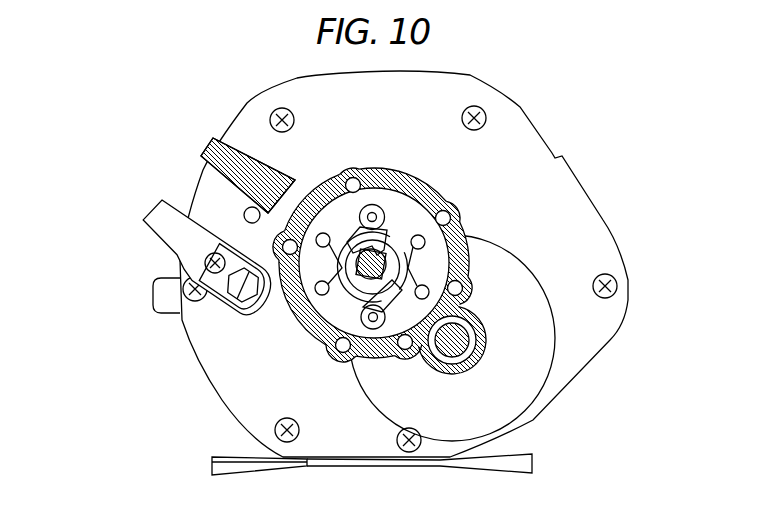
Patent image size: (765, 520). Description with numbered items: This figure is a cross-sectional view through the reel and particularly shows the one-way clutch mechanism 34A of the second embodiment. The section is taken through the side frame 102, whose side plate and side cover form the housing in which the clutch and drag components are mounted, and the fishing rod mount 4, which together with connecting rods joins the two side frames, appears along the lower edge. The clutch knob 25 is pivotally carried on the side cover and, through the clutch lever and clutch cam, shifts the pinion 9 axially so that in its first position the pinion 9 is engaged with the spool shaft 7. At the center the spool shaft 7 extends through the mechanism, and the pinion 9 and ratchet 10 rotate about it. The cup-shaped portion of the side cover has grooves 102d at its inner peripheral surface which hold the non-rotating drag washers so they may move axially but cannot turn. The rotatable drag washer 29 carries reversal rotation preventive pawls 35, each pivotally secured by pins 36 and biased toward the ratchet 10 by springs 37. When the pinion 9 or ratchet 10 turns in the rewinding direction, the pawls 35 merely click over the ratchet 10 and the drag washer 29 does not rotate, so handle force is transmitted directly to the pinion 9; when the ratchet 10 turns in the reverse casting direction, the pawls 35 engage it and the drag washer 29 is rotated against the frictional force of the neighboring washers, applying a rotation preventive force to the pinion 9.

The side frame 102 is at (523, 105).
The grooves 102d is at (408, 207).
The clutch knob 25 is at (162, 213).
The fishing rod mount 4 is at (523, 468).
The one-way clutch mechanism 34A is at (402, 230).
The reversal rotation preventive pawls 35 is at (340, 195).
The pins 36 is at (373, 204).
The springs 37 is at (323, 233).
The spool shaft 7 is at (383, 250).
The pinion 9 is at (340, 279).
The ratchet 10 is at (360, 272).
The drag washer 29 is at (345, 325).